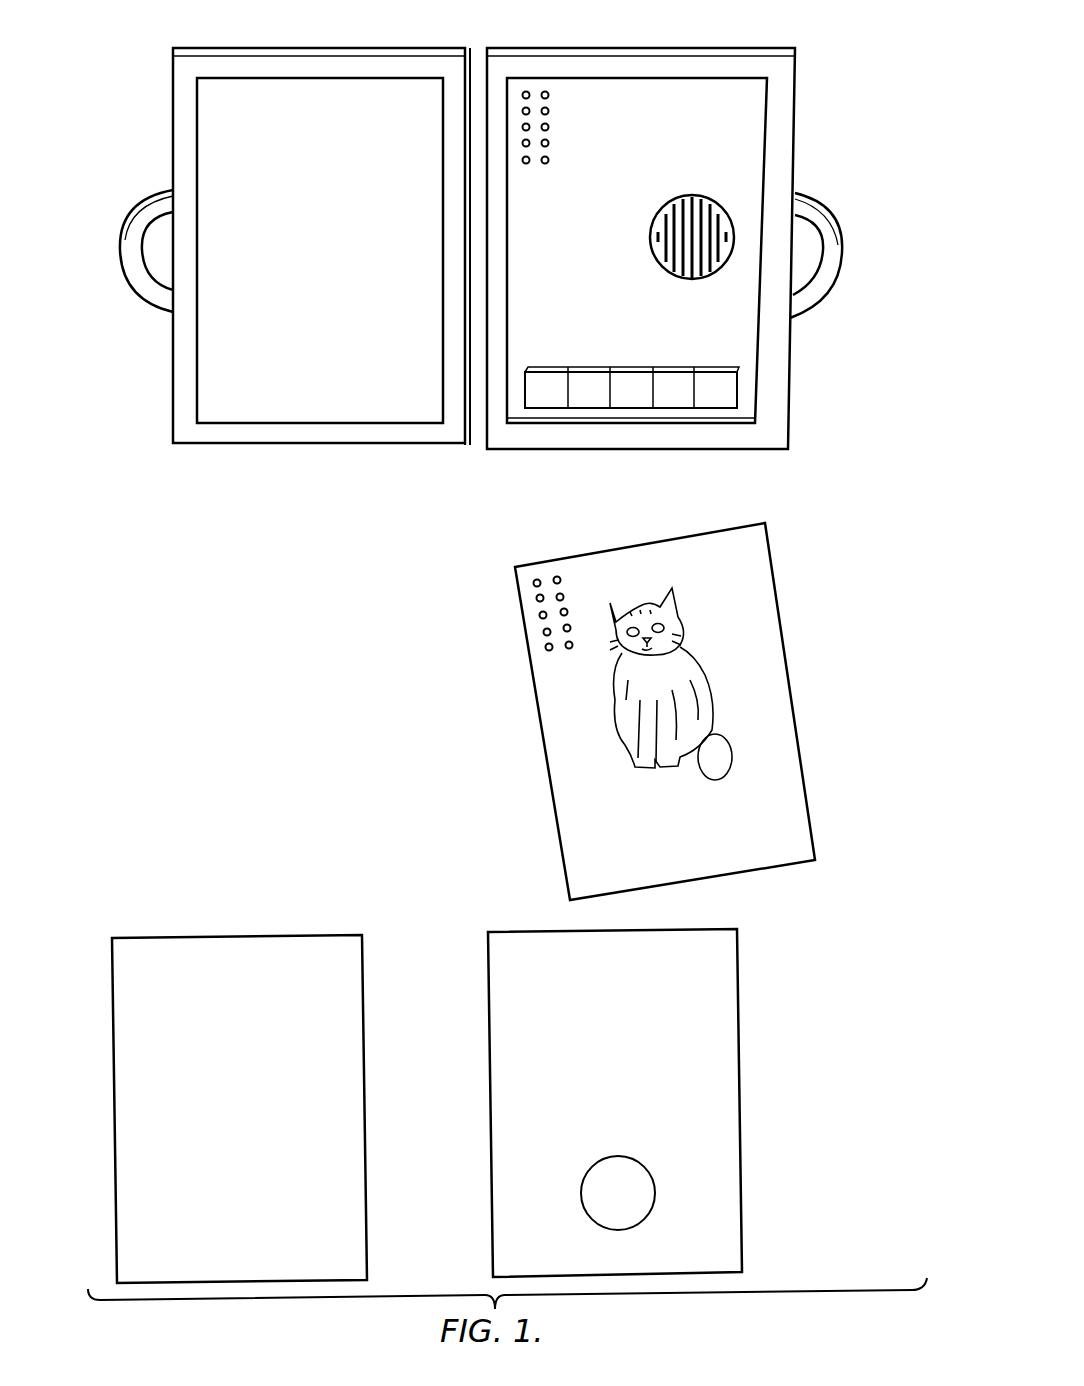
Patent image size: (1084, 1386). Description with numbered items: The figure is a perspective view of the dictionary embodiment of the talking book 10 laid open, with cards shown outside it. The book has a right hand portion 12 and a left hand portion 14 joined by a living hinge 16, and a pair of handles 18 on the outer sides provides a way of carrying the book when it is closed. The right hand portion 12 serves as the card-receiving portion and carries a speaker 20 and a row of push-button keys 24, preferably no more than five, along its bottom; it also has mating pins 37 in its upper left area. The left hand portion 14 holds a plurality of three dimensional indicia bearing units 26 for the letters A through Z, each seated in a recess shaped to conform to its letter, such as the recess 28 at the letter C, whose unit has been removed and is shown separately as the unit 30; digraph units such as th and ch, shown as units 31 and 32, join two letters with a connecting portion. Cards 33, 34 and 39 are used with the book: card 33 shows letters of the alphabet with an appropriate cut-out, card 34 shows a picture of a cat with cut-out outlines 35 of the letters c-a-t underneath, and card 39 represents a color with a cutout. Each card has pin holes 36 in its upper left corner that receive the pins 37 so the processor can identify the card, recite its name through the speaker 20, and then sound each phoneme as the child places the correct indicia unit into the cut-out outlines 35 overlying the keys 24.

The talking book 10 is at (150, 20).
The right hand portion 12 is at (720, 48).
The left hand portion 14 is at (237, 48).
The living hinge 16 is at (473, 428).
The handles 18 is at (823, 212).
The speaker 20 is at (691, 196).
The push-button keys 24 is at (673, 394).
The three dimensional indicia bearing units 26 is at (357, 396).
The recess 28 is at (334, 102).
The indicia bearing unit for letter C 30 is at (319, 838).
The letter block TH 31 is at (196, 672).
The letter block CH 32 is at (322, 712).
The card 33 is at (351, 934).
The card 34 is at (782, 722).
The cut-out outlines 35 is at (745, 858).
The pin holes 36 is at (536, 598).
The pins 37 is at (547, 130).
The card 39 is at (740, 938).